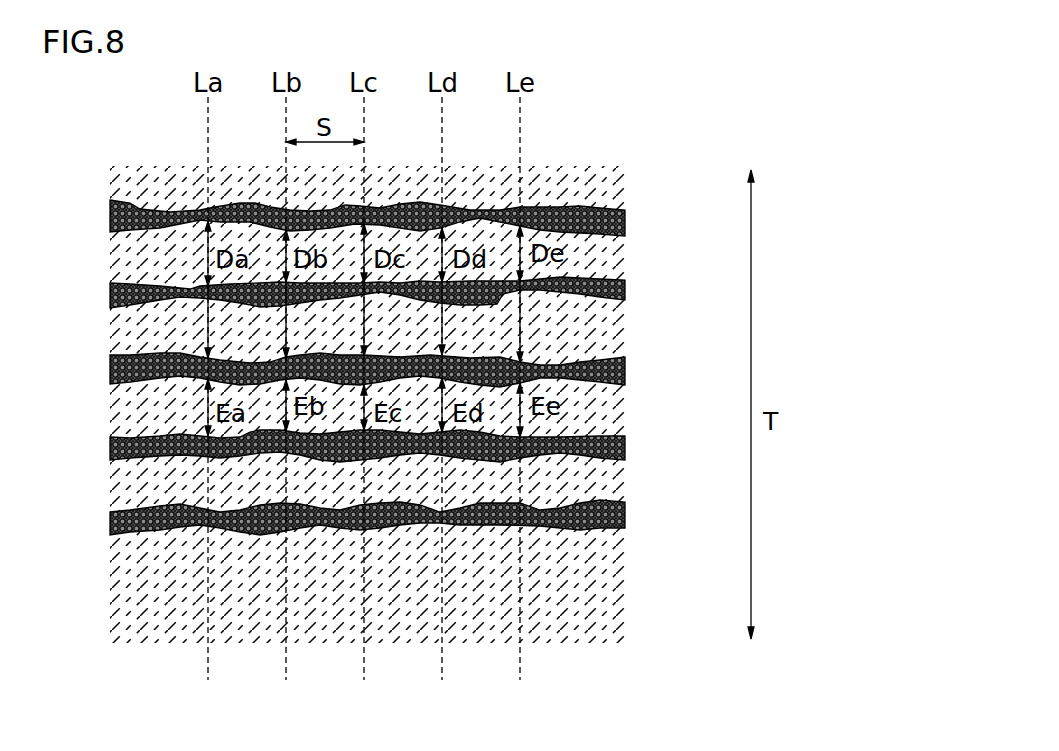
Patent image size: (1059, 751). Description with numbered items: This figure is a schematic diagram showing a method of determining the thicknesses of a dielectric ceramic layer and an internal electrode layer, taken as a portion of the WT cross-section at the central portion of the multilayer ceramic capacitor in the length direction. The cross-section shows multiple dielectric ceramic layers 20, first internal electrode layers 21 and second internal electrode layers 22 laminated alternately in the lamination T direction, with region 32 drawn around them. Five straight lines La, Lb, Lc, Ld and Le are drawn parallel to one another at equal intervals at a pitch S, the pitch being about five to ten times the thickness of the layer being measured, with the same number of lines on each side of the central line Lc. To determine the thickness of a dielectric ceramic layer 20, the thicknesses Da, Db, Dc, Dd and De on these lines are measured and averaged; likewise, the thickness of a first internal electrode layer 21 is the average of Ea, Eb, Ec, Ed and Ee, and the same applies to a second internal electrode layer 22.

The dielectric ceramic layer 20 is at (612, 254).
The first internal electrode layer 21 is at (112, 211).
The second internal electrode layer 22 is at (112, 292).
The substrate 32 is at (612, 606).